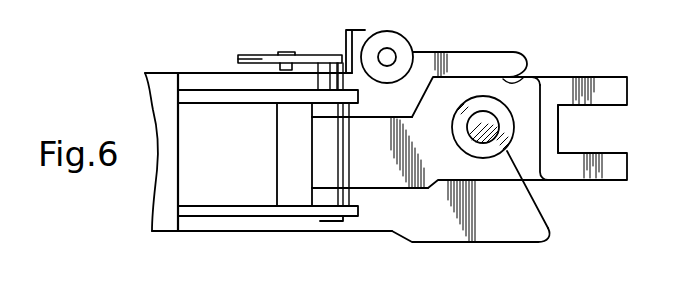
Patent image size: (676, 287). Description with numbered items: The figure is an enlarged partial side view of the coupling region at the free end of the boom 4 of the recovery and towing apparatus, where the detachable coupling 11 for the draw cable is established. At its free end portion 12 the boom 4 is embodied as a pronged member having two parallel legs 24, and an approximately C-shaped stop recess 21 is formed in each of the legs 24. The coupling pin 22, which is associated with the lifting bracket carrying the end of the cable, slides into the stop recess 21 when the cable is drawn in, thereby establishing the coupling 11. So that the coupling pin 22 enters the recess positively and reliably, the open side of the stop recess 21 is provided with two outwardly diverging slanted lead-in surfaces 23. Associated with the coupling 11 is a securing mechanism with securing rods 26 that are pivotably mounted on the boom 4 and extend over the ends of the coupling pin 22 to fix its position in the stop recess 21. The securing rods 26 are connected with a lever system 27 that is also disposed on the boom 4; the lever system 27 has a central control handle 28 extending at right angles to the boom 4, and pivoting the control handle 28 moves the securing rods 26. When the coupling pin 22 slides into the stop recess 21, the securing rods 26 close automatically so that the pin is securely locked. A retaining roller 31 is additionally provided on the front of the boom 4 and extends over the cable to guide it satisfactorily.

The boom 4 is at (200, 87).
The detachable coupling 11 is at (568, 72).
The free end portion 12 is at (284, 241).
The C-shaped stop recess 21 is at (455, 122).
The coupling pin 22 is at (471, 137).
The slanted lead-in surfaces 23 is at (470, 100).
The legs 24 is at (449, 241).
The securing rods 26 is at (540, 158).
The lever system 27 is at (309, 49).
The control handle 28 is at (255, 55).
The retaining roller 31 is at (399, 45).